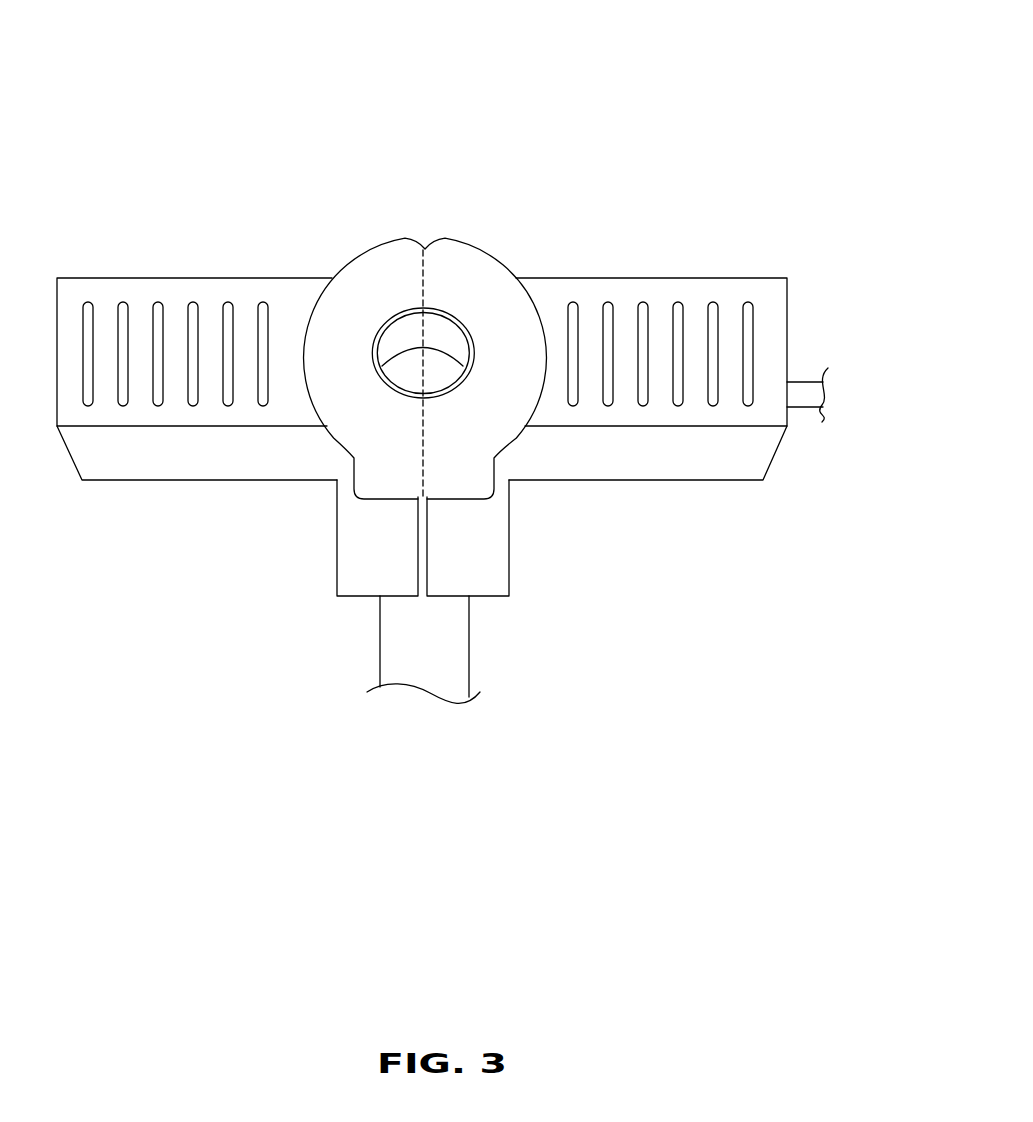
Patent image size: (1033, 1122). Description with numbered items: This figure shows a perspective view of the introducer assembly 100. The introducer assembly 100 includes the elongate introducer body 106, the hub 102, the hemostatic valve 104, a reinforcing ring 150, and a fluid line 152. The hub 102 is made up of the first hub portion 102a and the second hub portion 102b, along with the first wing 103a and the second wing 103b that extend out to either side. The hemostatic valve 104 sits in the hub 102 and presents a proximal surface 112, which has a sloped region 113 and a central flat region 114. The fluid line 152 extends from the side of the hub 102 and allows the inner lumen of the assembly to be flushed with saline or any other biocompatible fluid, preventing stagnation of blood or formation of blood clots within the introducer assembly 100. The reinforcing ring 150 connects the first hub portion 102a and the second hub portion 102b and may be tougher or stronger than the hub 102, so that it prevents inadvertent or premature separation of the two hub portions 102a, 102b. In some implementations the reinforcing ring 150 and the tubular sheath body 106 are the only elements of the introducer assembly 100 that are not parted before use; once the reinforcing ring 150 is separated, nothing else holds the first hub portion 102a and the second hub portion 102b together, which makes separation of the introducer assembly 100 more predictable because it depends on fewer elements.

The introducer assembly 100 is at (701, 88).
The hub 102 is at (353, 572).
The first hub portion 102a is at (310, 459).
The second hub portion 102b is at (520, 455).
The first wing 103a is at (143, 296).
The second wing 103b is at (661, 293).
The hemostatic valve 104 is at (434, 363).
The elongate introducer body 106 is at (450, 647).
The proximal surface 112 is at (411, 327).
The sloped region 113 is at (453, 343).
The central flat region 114 is at (410, 363).
The reinforcing ring 150 is at (450, 283).
The fluid line 152 is at (803, 380).